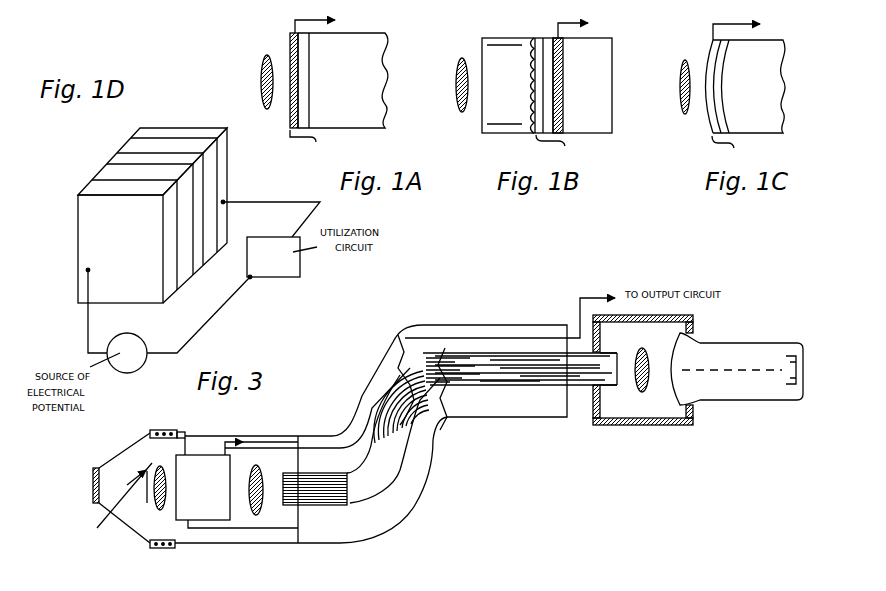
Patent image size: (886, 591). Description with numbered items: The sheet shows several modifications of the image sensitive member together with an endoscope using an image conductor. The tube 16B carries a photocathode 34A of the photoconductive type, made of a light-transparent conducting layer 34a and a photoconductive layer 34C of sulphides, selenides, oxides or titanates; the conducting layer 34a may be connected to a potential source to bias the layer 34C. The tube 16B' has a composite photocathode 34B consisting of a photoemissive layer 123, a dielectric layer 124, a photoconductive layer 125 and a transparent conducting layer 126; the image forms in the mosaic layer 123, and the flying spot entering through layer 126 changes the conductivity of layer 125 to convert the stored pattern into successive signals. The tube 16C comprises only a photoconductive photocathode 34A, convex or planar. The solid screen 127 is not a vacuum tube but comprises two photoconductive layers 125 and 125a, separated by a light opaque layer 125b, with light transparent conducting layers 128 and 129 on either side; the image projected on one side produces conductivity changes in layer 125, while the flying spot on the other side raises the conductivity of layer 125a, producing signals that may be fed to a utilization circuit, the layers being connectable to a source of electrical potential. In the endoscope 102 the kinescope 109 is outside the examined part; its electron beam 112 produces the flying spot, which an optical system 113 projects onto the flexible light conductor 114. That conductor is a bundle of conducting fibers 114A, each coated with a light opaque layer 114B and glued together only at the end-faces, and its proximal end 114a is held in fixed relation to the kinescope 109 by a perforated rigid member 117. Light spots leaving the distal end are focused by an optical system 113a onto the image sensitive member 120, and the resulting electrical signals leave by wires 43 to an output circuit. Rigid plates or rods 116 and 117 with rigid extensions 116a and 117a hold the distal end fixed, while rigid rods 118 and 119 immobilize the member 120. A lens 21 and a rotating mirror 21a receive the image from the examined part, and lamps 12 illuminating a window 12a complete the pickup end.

In FIG. 3, the lamps 12 is at (150, 433).
In FIG. 3, the object plate 12a is at (93, 490).
In FIG. 1A, the tube 16B is at (361, 69).
In FIG. 1B, the tube 16B' is at (568, 72).
In FIG. 1C, the tube 16C is at (768, 55).
In FIG. 3, the lens 21 is at (158, 496).
In FIG. 3, the rotating mirror 21a is at (106, 506).
In FIG. 1A, the light-transparent conducting layer 34a is at (290, 50).
In FIG. 1A, the photocathode 34A is at (321, 143).
In FIG. 1C, the photocathode 34A is at (741, 148).
In FIG. 1B, the composite photocathode 34B is at (567, 147).
In FIG. 1A, the photoconductive layer 34C is at (304, 99).
In FIG. 3, the wires 43 is at (580, 298).
In FIG. 3, the endoscope 102 is at (314, 452).
In FIG. 3, the kinescope 109 is at (728, 355).
In FIG. 3, the electron beam 112 is at (748, 376).
In FIG. 3, the optical system 113 is at (645, 392).
In FIG. 3, the optical system 113a is at (255, 513).
In FIG. 3, the light conductor 114 is at (546, 388).
In FIG. 3, the conducting fiber 114A is at (527, 373).
In FIG. 3, the light opaque layer 114B is at (360, 500).
In FIG. 3, the proximal end 114a is at (618, 356).
In FIG. 3, the rigid plate or rod 116 is at (258, 440).
In FIG. 3, the rigid extension 116a is at (296, 436).
In FIG. 3, the perforated rigid member 117 is at (230, 529).
In FIG. 3, the rigid extension 117a is at (317, 544).
In FIG. 3, the rigid rod 118 is at (183, 432).
In FIG. 3, the rigid rod 119 is at (187, 545).
In FIG. 3, the image sensitive member 120 is at (199, 452).
In FIG. 1B, the photoemissive layer 123 is at (531, 94).
In FIG. 1B, the dielectric layer 124 is at (540, 38).
In FIG. 1D, the photoconductive layer 125 is at (250, 277).
In FIG. 1B, the photoconductive layer 125 is at (557, 113).
In FIG. 1D, the photoconductive layer 125a is at (126, 143).
In FIG. 1D, the light opaque layer 125b is at (233, 276).
In FIG. 1B, the transparent conducting layer 126 is at (561, 96).
In FIG. 1D, the solid screen 127 is at (183, 96).
In FIG. 1D, the light transparent conducting layer 128 is at (135, 283).
In FIG. 1D, the light transparent conducting layer 129 is at (192, 130).